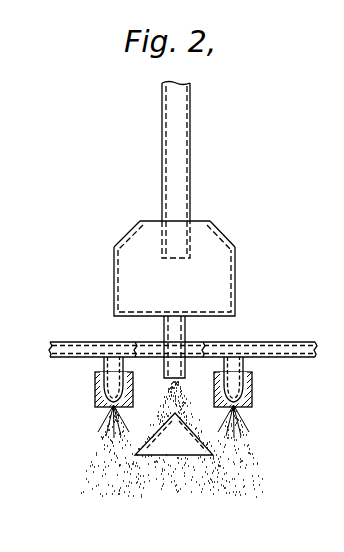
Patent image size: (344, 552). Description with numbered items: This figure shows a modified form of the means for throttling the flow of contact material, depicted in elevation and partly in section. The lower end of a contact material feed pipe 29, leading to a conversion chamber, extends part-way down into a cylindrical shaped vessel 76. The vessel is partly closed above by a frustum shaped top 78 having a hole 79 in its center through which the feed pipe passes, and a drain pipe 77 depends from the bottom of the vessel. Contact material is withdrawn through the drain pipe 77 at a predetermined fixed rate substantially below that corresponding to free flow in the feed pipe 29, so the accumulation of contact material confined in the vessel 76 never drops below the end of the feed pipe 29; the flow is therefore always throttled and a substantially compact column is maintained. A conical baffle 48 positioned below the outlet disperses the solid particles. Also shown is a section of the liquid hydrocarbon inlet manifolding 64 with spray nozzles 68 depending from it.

The contact material feed pipe 29 is at (190, 153).
The hole 79 is at (196, 221).
The frustum shaped top 78 is at (222, 234).
The cylindrical shaped vessel 76 is at (235, 292).
The drain pipe 77 is at (183, 333).
The liquid hydrocarbon inlet manifolding 64 is at (74, 341).
The spray nozzles 68 is at (95, 390).
The conical baffle 48 is at (181, 452).